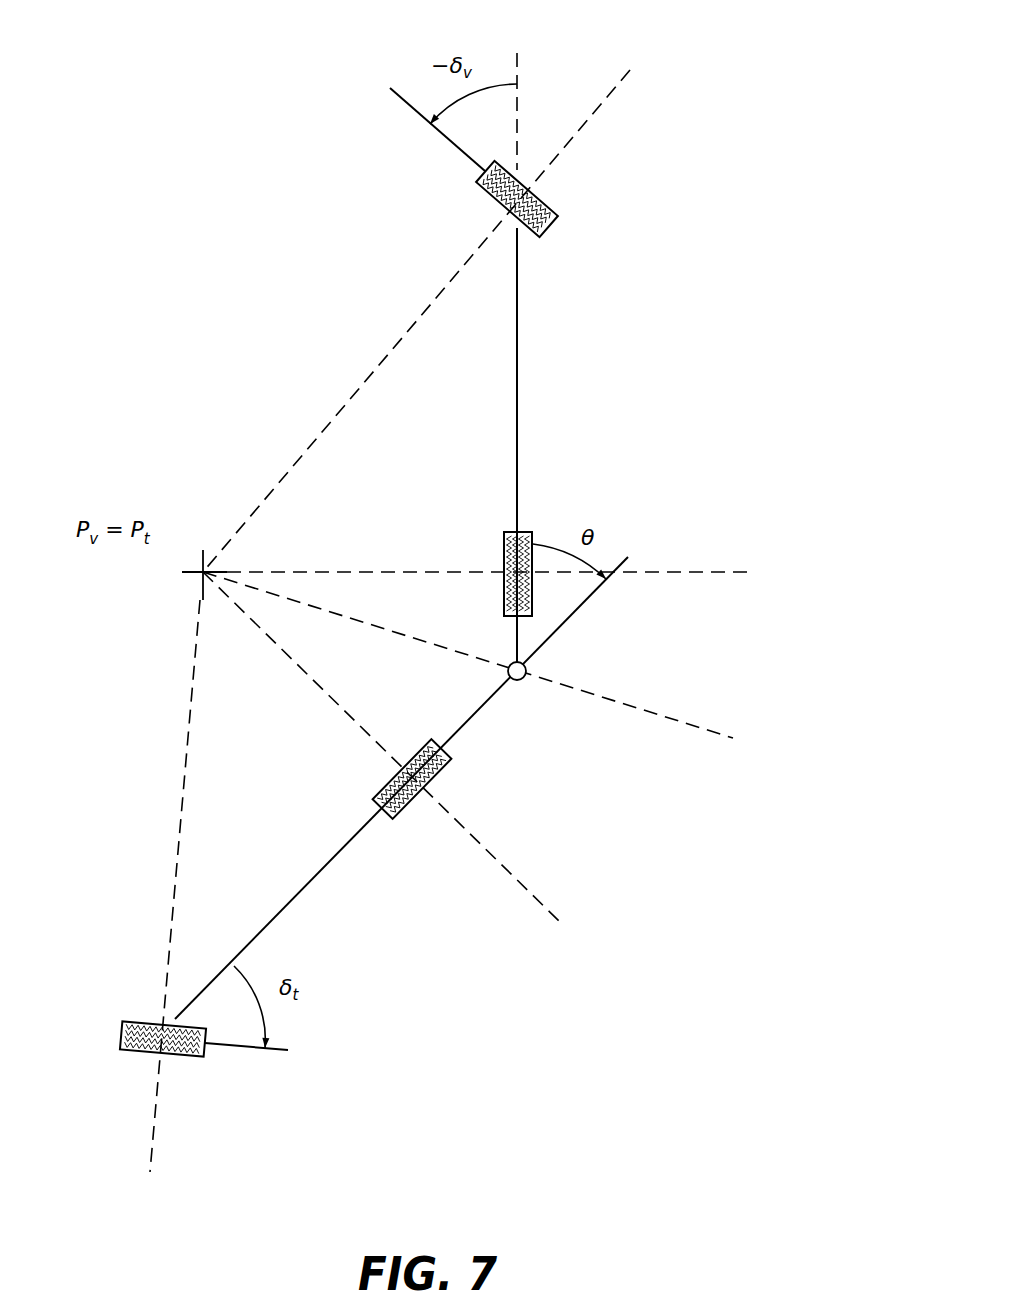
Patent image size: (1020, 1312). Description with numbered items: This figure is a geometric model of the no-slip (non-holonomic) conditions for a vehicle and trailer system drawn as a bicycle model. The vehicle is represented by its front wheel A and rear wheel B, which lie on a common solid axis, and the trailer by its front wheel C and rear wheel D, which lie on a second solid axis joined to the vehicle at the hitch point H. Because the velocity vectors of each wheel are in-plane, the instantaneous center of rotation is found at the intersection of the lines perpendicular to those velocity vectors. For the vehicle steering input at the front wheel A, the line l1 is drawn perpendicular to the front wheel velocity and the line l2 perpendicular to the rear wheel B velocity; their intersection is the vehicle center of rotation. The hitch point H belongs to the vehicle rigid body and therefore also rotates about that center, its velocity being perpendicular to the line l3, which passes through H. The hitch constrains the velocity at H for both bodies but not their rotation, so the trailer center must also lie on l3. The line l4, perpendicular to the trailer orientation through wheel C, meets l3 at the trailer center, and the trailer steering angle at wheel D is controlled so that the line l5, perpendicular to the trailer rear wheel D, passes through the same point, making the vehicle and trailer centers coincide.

The front wheel A of vehicle A is at (486, 162).
The rear wheel B of vehicle B is at (499, 574).
The front wheel C of trailer C is at (412, 769).
The rear wheel D of trailer D is at (203, 1022).
The hitch point H is at (504, 652).
The line perpendicular to front wheel velocity l1 is at (428, 298).
The line perpendicular to rear wheel velocity l2 is at (502, 573).
The line perpendicular to hitch velocity l3 is at (483, 664).
The line perpendicular to trailer orientation l4 is at (396, 759).
The line perpendicular to trailer rear wheel l5 is at (165, 908).